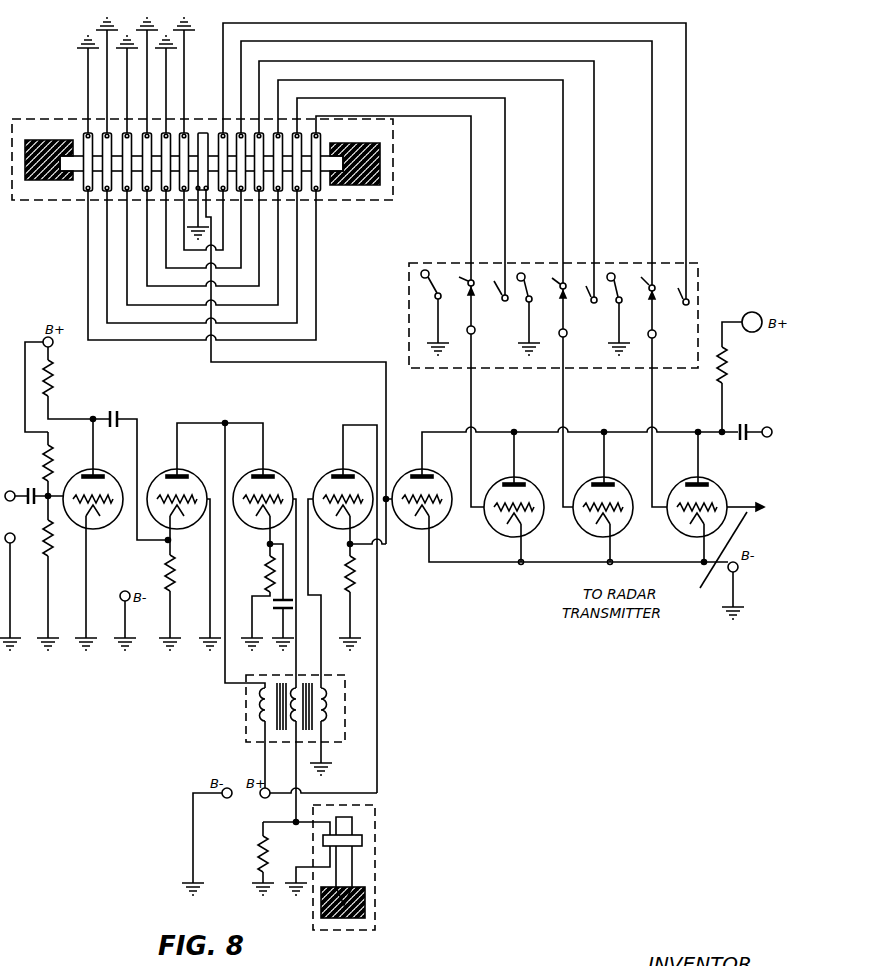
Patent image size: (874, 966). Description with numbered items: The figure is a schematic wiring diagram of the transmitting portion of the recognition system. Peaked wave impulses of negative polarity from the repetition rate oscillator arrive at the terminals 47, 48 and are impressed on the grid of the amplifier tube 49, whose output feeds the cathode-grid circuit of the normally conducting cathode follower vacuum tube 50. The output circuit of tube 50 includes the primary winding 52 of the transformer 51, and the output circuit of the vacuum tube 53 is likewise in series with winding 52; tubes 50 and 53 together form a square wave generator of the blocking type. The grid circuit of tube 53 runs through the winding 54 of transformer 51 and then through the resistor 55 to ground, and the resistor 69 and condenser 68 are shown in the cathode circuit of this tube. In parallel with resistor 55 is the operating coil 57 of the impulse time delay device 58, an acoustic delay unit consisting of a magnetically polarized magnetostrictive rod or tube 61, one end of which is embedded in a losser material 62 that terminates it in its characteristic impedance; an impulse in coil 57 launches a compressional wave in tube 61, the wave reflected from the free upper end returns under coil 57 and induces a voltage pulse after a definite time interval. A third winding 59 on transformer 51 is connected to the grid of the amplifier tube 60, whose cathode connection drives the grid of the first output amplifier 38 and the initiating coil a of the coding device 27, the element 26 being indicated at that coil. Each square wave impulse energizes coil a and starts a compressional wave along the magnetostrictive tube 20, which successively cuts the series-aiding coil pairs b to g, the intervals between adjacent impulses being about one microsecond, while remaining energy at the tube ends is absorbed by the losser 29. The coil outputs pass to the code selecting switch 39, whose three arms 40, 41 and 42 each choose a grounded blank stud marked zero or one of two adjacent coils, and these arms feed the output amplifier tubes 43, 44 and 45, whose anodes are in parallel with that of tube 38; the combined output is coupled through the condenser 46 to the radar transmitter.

The magnetostrictive tube 20 is at (193, 154).
The coils 26 is at (205, 133).
The coding device 27 is at (57, 126).
The losser 29 is at (343, 171).
The output tube 38 is at (411, 473).
The code selecting switch 39 is at (570, 300).
The switch arm 40 is at (656, 318).
The switch arm 41 is at (565, 316).
The switch arm 42 is at (474, 316).
The output amplifier tube 43 is at (678, 483).
The output amplifier tube 44 is at (588, 481).
The output amplifier tube 45 is at (496, 481).
The condenser 46 is at (746, 425).
The terminal 47 is at (11, 490).
The terminal 48 is at (12, 543).
The amplifier tube 49 is at (82, 470).
The cathode follower vacuum tube 50 is at (163, 470).
The transformer 51 is at (250, 730).
The primary winding 52 is at (262, 697).
The vacuum tube 53 is at (249, 470).
The winding 54 is at (294, 691).
The resistor 55 is at (258, 850).
The operating coil 57 is at (324, 840).
The impulse time delay device 58 is at (344, 867).
The third winding 59 is at (325, 718).
The amplifier tube 60 is at (328, 470).
The magnetostrictive rod or tube 61 is at (353, 830).
The losser material 62 is at (364, 906).
The capacitor 68 is at (281, 613).
The resistor 69 is at (266, 568).